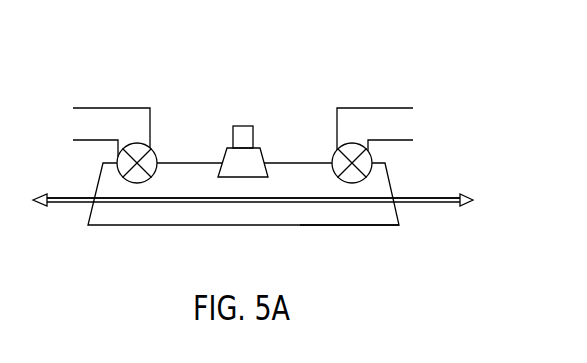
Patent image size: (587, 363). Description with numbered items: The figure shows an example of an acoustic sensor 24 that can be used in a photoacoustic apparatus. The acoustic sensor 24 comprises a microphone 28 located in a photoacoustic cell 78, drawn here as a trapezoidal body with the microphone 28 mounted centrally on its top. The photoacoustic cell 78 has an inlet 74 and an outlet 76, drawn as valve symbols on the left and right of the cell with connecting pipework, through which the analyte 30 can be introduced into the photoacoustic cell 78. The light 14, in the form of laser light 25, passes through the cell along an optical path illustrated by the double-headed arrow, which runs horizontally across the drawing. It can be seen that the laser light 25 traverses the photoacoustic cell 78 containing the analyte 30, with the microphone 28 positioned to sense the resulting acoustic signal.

The acoustic sensor 24 is at (306, 54).
The laser light 25 is at (432, 240).
The microphone 28 is at (242, 125).
The analyte 30 is at (182, 215).
The inlet 74 is at (98, 122).
The outlet 76 is at (382, 122).
The photoacoustic cell 78 is at (370, 226).
The light 14 is at (433, 196).